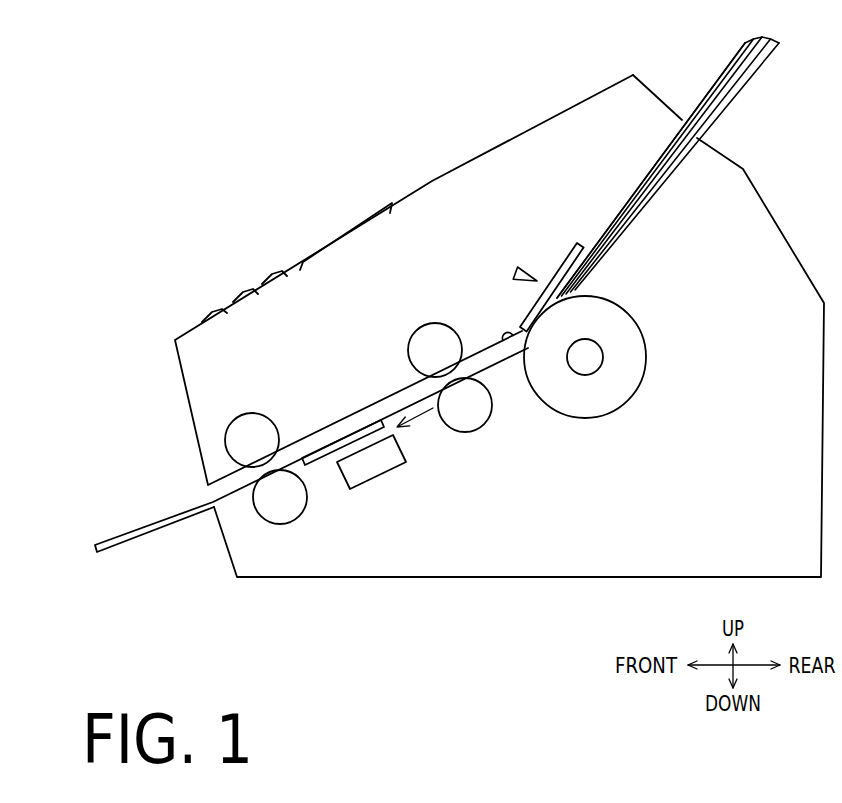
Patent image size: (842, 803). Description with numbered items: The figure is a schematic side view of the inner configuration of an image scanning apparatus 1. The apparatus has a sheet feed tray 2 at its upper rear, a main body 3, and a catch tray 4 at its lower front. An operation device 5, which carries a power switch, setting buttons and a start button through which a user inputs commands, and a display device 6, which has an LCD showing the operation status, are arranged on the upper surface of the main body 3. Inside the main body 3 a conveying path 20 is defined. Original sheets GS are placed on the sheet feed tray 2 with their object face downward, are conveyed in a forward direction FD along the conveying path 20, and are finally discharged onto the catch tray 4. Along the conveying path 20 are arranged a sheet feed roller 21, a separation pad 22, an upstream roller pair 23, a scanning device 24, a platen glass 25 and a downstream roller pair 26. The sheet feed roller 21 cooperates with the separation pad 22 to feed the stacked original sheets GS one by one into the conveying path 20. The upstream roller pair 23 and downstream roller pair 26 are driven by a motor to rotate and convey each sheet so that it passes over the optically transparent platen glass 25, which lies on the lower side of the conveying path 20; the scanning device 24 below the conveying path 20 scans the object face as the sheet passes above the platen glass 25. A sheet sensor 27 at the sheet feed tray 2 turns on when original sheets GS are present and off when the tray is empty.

The image scanning apparatus 1 is at (215, 121).
The sheet feed tray 2 is at (751, 77).
The original sheets GS is at (719, 78).
The main body 3 is at (430, 180).
The catch tray 4 is at (157, 527).
The operation device 5 is at (232, 278).
The display device 6 is at (332, 228).
The conveying path 20 is at (512, 333).
The sheet feed roller 21 is at (646, 355).
The separation pad 22 is at (563, 257).
The upstream roller pair 23 is at (447, 342).
The scanning device 24 is at (370, 472).
The platen glass 25 is at (317, 460).
The downstream roller pair 26 is at (237, 442).
The sheet sensor 27 is at (514, 273).
The forward direction FD is at (413, 420).